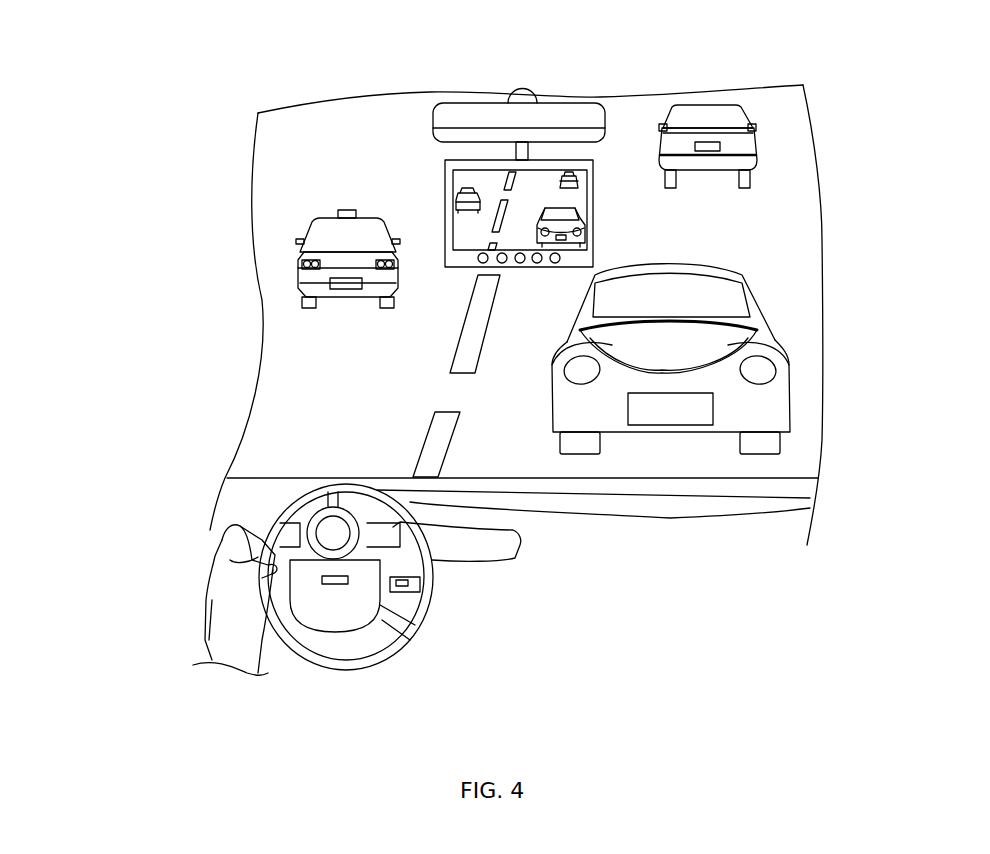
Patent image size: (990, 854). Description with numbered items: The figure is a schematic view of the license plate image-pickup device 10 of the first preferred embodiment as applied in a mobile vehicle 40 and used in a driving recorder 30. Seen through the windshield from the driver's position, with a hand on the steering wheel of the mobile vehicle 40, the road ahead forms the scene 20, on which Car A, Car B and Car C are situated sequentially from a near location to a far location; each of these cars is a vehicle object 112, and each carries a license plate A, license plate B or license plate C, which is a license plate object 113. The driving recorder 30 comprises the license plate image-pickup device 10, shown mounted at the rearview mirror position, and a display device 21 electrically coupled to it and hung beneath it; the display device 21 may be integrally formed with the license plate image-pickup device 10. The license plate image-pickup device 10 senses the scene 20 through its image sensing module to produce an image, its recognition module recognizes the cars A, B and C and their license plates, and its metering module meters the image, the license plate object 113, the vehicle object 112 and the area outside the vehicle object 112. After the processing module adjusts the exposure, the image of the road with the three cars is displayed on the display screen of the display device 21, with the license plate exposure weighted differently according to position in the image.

The license plate image-pickup device 10 is at (467, 125).
The scene 20 is at (782, 190).
The display device 21 is at (453, 258).
The driving recorder 30 is at (442, 142).
The mobile vehicle 40 is at (238, 508).
The vehicle object 112 is at (762, 359).
The license plate object 113 is at (713, 413).
The Car A is at (762, 356).
The Car B is at (322, 235).
The Car C is at (733, 120).